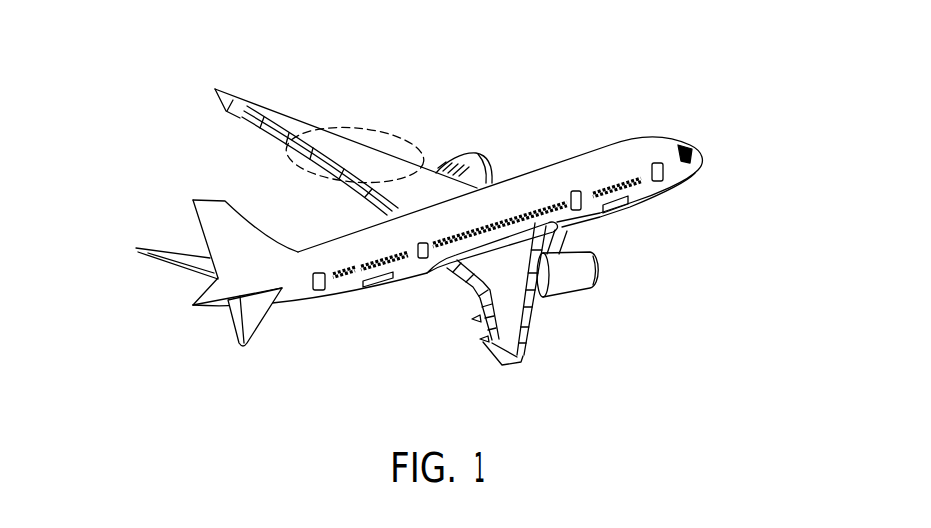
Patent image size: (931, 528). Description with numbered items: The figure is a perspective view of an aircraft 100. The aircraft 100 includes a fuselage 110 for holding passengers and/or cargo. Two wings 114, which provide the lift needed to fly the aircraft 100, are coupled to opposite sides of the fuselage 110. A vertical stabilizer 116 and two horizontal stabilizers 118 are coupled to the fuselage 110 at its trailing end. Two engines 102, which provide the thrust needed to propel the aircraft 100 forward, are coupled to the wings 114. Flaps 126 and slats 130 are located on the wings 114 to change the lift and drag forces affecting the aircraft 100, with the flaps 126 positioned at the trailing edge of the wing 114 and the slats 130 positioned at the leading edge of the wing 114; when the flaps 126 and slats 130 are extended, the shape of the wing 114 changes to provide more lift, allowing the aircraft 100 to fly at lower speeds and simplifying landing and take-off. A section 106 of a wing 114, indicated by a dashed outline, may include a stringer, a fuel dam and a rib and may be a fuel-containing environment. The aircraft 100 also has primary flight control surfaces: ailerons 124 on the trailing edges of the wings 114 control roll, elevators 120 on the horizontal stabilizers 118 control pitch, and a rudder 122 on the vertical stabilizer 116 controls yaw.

The aircraft 100 is at (473, 113).
The engines 102 is at (490, 152).
The section 106 is at (356, 128).
The fuselage 110 is at (605, 163).
The wings 114 is at (408, 186).
The vertical stabilizer 116 is at (240, 214).
The horizontal stabilizers 118 is at (173, 249).
The elevators 120 is at (157, 267).
The rudder 122 is at (194, 207).
The ailerons 124 is at (234, 124).
The flaps 126 is at (370, 193).
The slats 130 is at (527, 347).